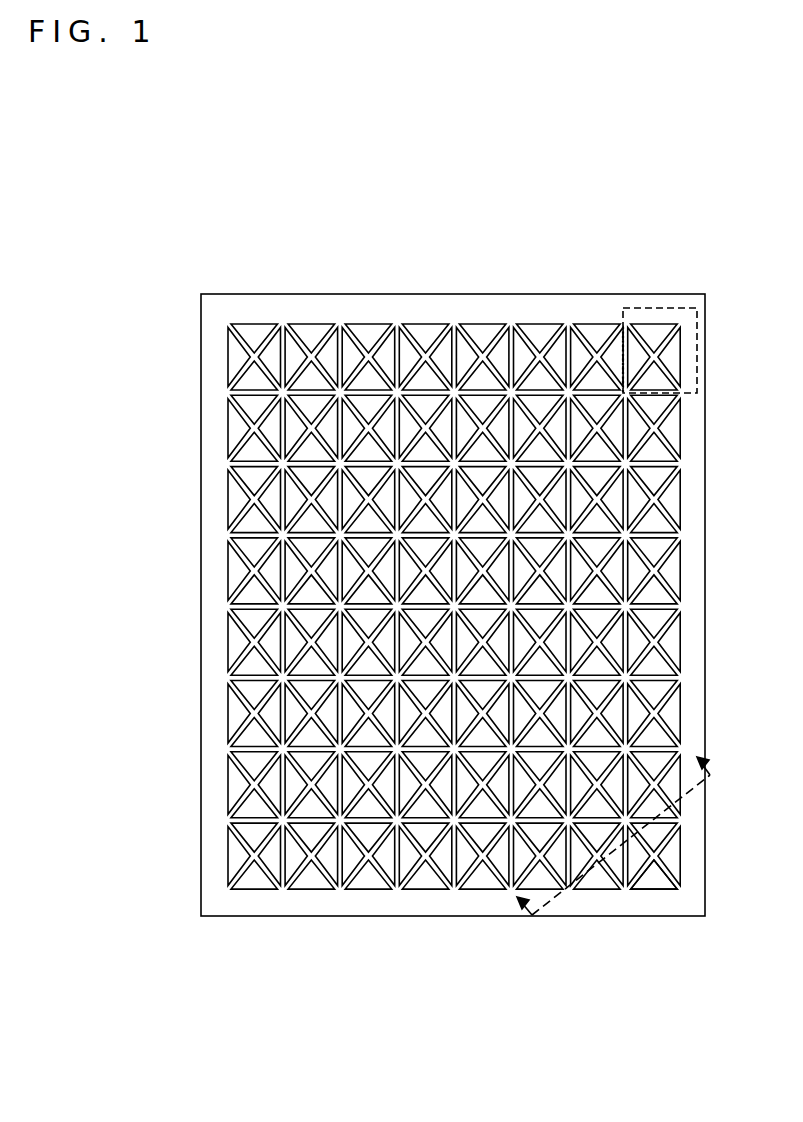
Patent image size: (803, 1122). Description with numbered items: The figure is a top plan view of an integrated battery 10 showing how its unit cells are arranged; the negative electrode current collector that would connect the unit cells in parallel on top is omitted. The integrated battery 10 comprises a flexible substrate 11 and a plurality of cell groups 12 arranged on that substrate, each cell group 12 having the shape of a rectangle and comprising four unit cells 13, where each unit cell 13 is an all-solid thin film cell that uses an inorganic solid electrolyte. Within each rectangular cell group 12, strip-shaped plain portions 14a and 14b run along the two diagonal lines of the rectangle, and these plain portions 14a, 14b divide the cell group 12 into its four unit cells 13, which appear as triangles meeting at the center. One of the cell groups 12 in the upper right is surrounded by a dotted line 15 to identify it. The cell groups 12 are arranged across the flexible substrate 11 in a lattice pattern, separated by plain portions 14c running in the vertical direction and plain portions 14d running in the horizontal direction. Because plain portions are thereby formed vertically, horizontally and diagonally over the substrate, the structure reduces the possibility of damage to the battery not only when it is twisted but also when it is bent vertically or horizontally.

The integrated battery 10 is at (458, 596).
The flexible substrate 11 is at (527, 308).
The cell group 12 is at (637, 322).
The unit cell 13 is at (653, 330).
The plain portion 14a is at (677, 326).
The plain portion 14b is at (678, 391).
The plain portion 14c is at (283, 337).
The plain portion 14d is at (232, 392).
The dotted line 15 is at (697, 338).